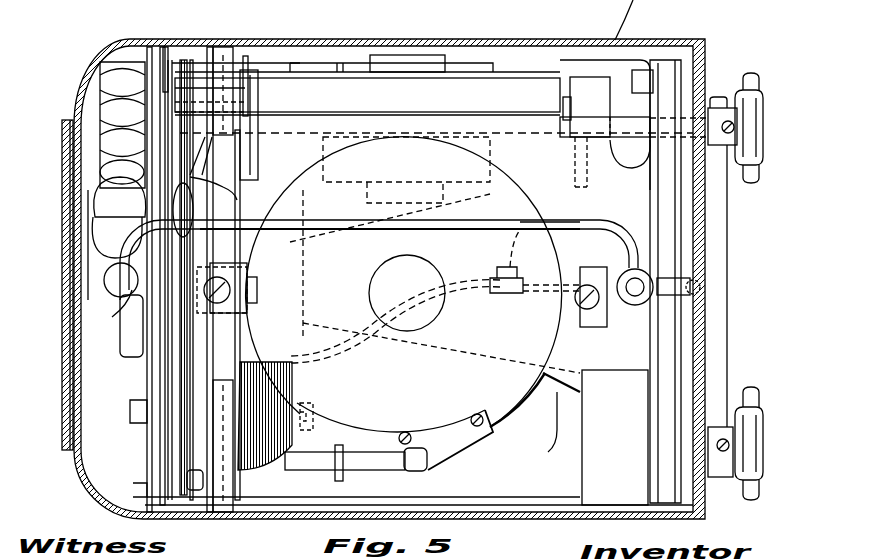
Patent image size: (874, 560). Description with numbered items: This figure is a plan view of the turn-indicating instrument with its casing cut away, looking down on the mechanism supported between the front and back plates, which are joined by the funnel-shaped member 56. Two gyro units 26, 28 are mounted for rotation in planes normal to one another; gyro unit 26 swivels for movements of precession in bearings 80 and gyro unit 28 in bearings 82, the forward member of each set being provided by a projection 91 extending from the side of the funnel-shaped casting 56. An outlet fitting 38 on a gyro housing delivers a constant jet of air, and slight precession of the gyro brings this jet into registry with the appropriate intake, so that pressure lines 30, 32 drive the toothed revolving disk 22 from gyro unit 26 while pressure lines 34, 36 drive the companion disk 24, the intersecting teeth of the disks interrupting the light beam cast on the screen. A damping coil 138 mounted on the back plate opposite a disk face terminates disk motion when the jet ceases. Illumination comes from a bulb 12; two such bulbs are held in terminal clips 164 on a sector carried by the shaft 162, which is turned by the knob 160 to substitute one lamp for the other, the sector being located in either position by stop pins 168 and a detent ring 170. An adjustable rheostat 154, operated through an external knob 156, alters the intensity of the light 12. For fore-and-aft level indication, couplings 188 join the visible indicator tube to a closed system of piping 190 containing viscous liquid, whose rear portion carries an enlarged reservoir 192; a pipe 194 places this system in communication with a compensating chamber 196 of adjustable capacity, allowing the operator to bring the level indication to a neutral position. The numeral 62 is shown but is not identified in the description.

The bulb 12 is at (90, 195).
The revolving disk 22 is at (187, 457).
The revolving disk 24 is at (165, 90).
The gyro unit 26 is at (503, 403).
The gyro unit 28 is at (587, 83).
The pressure line 30 is at (283, 62).
The pressure line 32 is at (230, 183).
The pressure line 34 is at (345, 482).
The pressure line 36 is at (190, 60).
The outlet fitting 38 is at (440, 468).
The funnel-shaped member 56 is at (535, 430).
The arm 62 is at (646, 20).
The bearings 80 is at (247, 263).
The bearings 82 is at (242, 113).
The projection 91 is at (600, 82).
The coil 138 is at (298, 388).
The adjustable rheostat 154 is at (615, 437).
The knob 156 is at (767, 465).
The knob 160 is at (765, 100).
The shaft 162 is at (373, 110).
The terminal clips 164 is at (147, 67).
The stop pins 168 is at (303, 160).
The detent ring 170 is at (247, 181).
The coupling 188 is at (623, 245).
The piping 190 is at (437, 228).
The reservoir 192 is at (110, 303).
The pipe 194 is at (580, 205).
The compensating chamber 196 is at (640, 62).